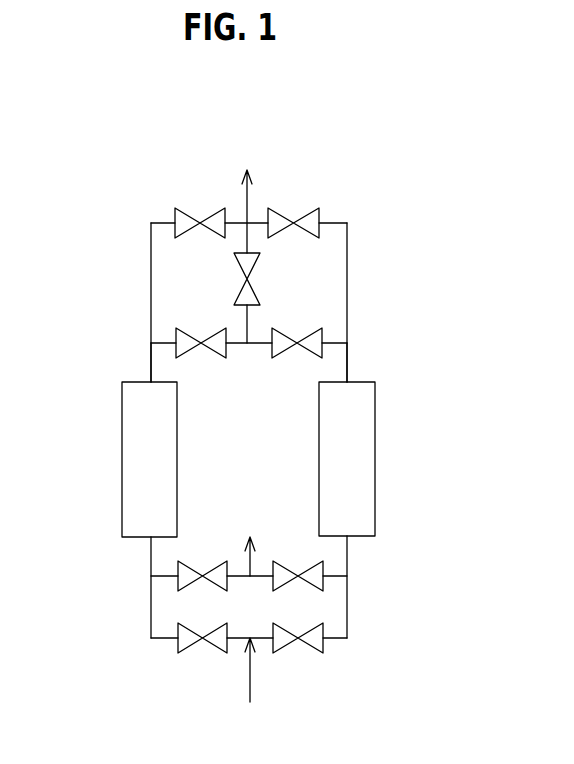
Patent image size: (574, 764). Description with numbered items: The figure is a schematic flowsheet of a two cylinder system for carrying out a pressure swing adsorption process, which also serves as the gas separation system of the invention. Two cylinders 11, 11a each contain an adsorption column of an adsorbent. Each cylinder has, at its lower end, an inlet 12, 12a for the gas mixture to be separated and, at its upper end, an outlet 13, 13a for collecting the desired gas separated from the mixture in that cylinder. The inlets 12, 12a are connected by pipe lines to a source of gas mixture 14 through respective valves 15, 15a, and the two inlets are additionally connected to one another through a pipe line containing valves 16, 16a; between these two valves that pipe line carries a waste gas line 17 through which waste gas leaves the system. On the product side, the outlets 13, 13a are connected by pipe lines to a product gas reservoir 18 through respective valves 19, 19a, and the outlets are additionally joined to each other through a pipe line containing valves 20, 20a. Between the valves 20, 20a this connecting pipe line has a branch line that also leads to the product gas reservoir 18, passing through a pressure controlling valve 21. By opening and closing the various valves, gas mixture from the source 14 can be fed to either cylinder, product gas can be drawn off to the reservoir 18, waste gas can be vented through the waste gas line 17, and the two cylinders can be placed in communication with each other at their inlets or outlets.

The cylinder 11 is at (122, 397).
The cylinder 11a is at (376, 400).
The inlet 12 is at (150, 548).
The inlet 12a is at (348, 552).
The outlet 13 is at (150, 362).
The outlet 13a is at (348, 360).
The source of gas mixture 14 is at (258, 687).
The valve 15 is at (203, 653).
The valve 15a is at (298, 653).
The valve 16 is at (203, 578).
The valve 16a is at (298, 578).
The waste gas line 17 is at (255, 537).
The product gas reservoir 18 is at (252, 190).
The valve 19 is at (199, 221).
The valve 19a is at (294, 220).
The valve 20 is at (201, 341).
The valve 20a is at (297, 341).
The pressure controlling valve 21 is at (255, 280).